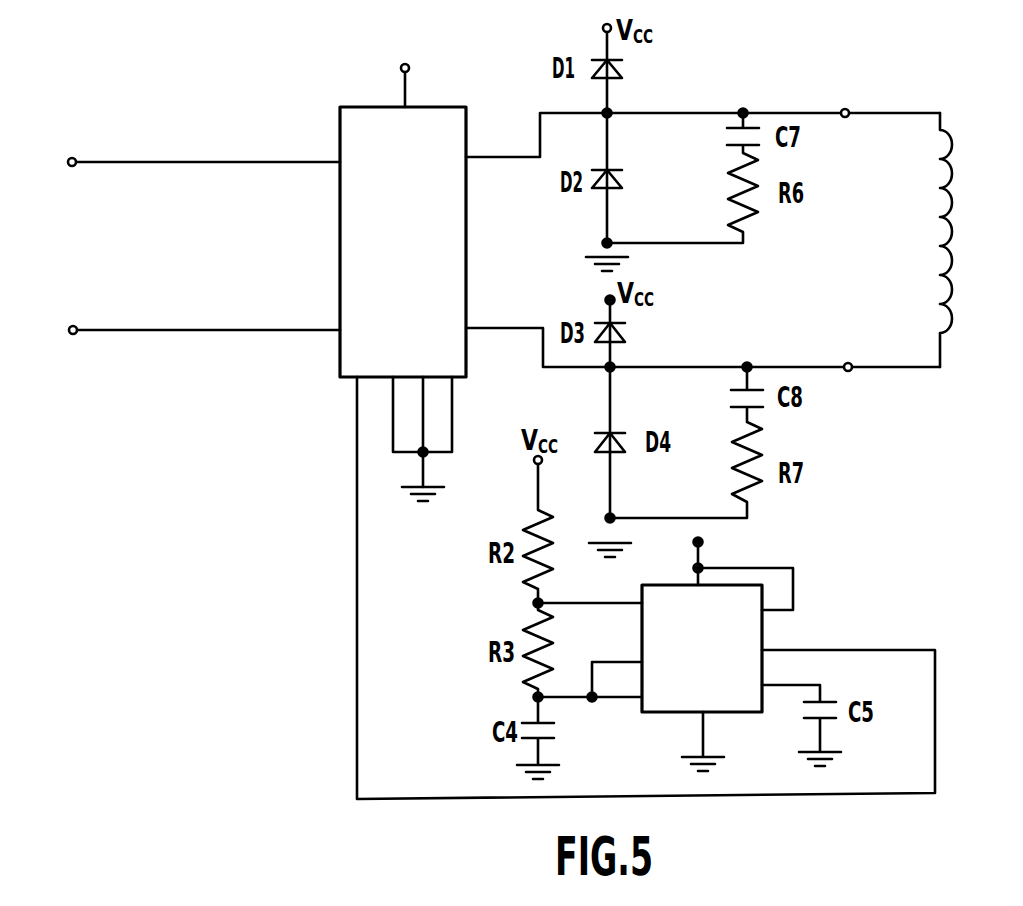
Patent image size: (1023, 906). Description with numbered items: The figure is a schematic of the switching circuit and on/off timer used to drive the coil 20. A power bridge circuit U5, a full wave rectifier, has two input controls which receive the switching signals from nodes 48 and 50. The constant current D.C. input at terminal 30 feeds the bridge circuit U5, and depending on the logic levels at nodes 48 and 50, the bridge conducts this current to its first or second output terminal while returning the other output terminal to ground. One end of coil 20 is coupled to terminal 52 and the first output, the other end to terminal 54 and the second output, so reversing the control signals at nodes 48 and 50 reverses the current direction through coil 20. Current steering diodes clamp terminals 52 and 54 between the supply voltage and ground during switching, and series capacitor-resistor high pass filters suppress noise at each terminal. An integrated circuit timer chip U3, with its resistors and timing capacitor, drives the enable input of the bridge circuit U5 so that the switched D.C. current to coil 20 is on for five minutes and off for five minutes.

The coil 20 is at (947, 226).
The node 30 is at (410, 68).
The node 48 is at (72, 167).
The node 50 is at (73, 335).
The terminal 52 is at (846, 108).
The terminal 54 is at (849, 362).
The power bridge circuit U5 is at (355, 107).
The 555 integrated circuit timer chip U3 is at (670, 584).